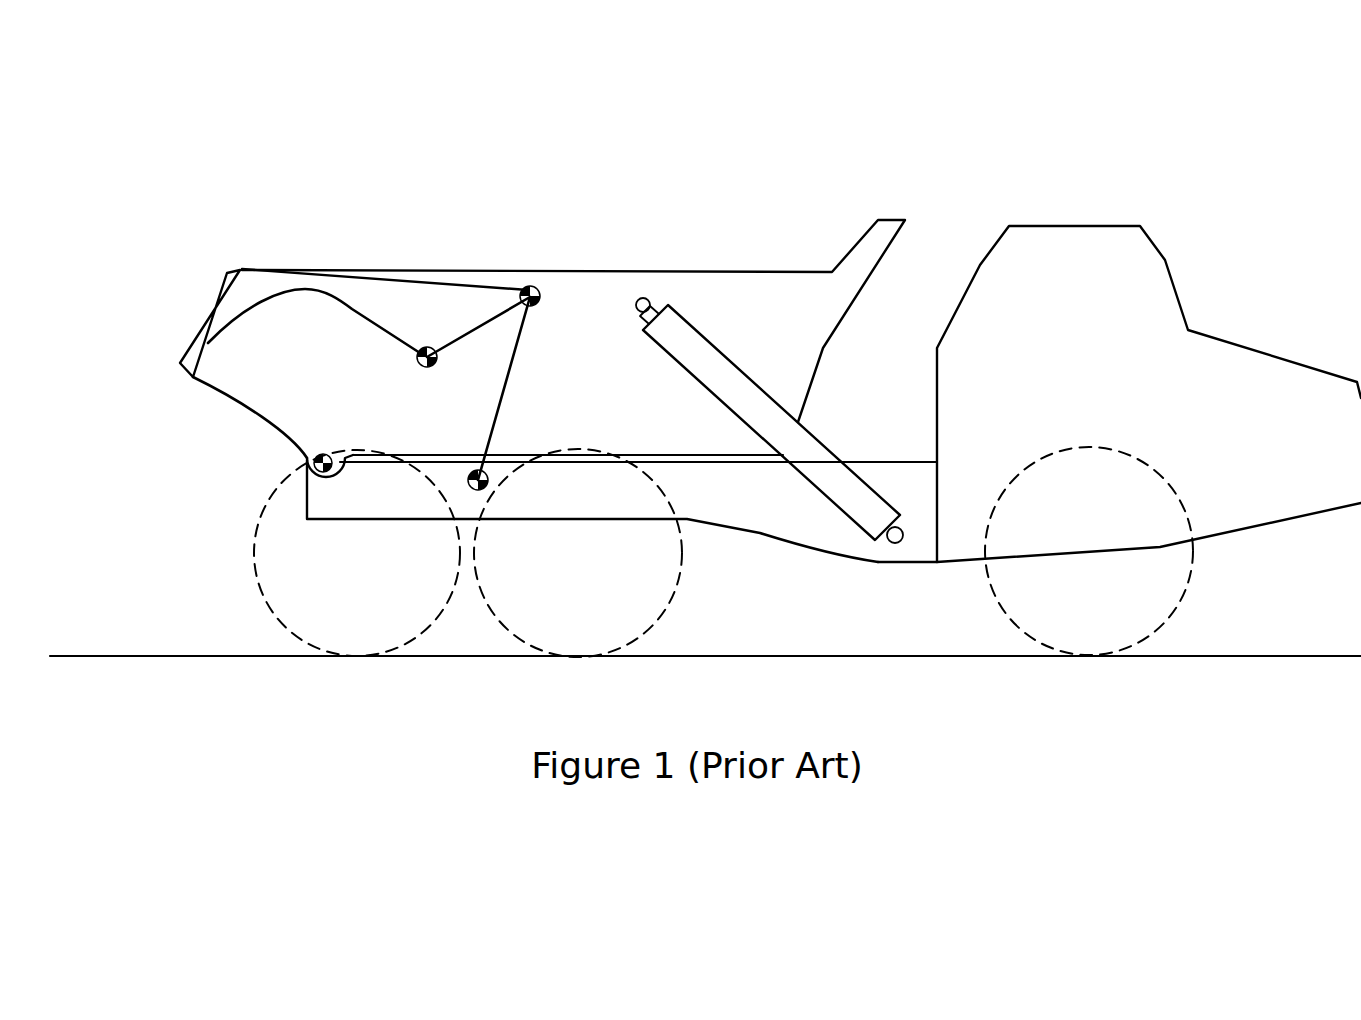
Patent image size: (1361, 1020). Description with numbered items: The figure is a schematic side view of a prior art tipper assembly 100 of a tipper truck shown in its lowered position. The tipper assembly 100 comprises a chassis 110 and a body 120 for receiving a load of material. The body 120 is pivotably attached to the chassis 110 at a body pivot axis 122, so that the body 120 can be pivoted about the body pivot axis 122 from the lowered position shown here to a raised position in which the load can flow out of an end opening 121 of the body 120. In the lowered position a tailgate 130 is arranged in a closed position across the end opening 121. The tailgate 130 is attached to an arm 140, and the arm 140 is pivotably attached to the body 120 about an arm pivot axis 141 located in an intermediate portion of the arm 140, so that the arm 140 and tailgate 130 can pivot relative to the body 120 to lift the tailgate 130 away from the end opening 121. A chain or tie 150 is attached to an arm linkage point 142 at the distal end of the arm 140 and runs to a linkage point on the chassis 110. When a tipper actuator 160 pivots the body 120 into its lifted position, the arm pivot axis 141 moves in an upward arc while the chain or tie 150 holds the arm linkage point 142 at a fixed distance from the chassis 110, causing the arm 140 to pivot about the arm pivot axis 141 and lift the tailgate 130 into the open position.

The tipper assembly 100 is at (155, 307).
The chassis 110 is at (485, 488).
The body 120 is at (732, 300).
The end opening 121 is at (162, 365).
The body pivot axis 122 is at (310, 472).
The tailgate 130 is at (225, 287).
The arm 140 is at (377, 297).
The arm pivot axis 141 is at (426, 346).
The arm linkage point 142 is at (528, 286).
The chain or tie 150 is at (517, 353).
The tipper actuator 160 is at (837, 482).